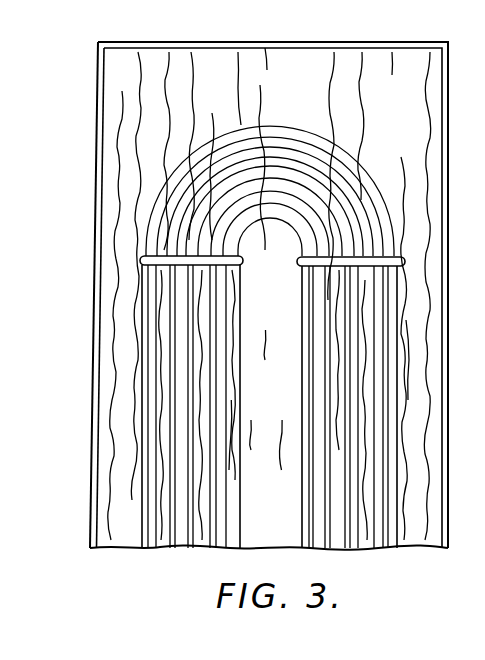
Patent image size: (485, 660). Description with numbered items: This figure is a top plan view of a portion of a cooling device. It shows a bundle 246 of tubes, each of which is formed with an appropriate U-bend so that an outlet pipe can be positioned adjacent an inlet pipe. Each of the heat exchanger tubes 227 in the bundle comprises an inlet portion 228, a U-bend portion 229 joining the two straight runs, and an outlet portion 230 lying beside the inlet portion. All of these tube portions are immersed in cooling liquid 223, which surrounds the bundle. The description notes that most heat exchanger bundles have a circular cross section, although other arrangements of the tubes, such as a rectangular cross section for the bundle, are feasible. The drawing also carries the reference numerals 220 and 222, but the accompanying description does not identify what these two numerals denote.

The door panel 220 is at (92, 178).
The panel edge 222 is at (92, 267).
The cooling liquid 223 is at (253, 58).
The bundle of tubes 246 is at (281, 161).
The U-bend portion 229 is at (366, 170).
The inlet portion 228 is at (239, 301).
The outlet portion 230 is at (302, 412).
The heat exchanger tube 227 is at (297, 463).